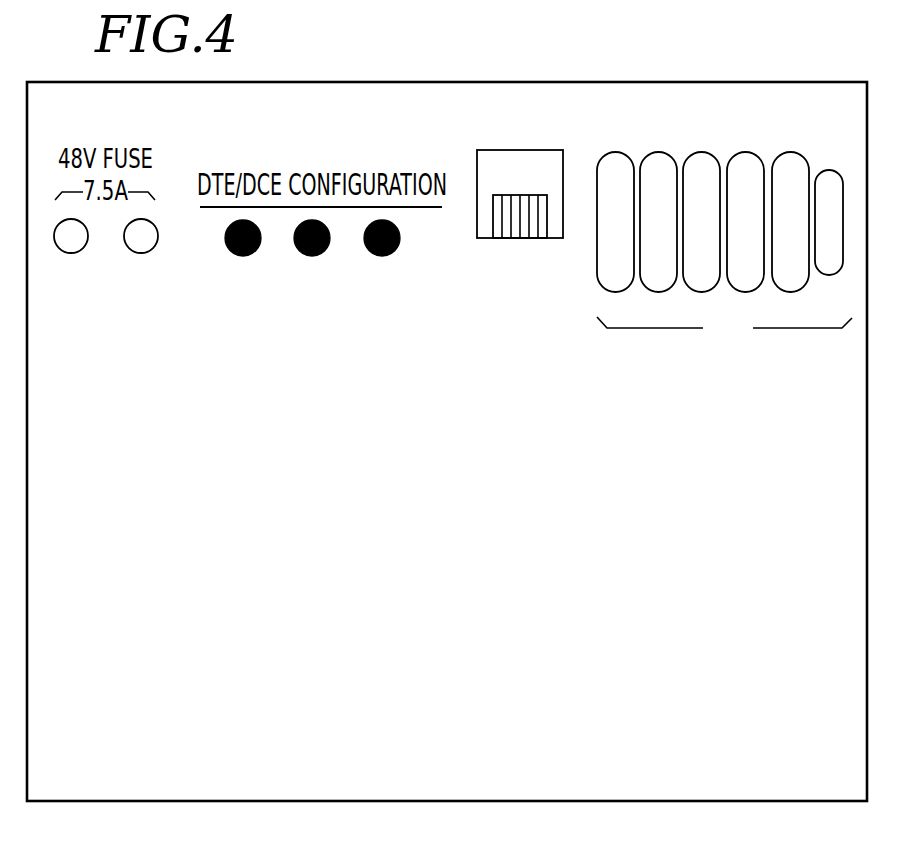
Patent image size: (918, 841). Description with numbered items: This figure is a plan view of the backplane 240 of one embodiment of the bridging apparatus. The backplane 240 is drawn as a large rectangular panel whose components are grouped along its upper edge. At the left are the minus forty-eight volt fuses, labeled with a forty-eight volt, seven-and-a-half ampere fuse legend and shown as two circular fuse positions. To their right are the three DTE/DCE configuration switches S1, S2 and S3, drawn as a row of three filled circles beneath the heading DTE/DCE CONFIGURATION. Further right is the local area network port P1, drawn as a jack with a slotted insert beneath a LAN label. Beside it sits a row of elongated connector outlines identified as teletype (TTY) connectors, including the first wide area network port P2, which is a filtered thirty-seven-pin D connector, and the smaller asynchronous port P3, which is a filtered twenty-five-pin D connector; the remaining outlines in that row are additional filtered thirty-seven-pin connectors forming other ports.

The backplane 240 is at (290, 82).
The local area network port P1 is at (82, 249).
The first wide area network port P2 is at (152, 249).
The asynchronous port P3 is at (831, 169).
The DTE/DCE configuration switch S1 is at (253, 253).
The DTE/DCE configuration switch S2 is at (322, 253).
The DTE/DCE configuration switch S3 is at (392, 253).